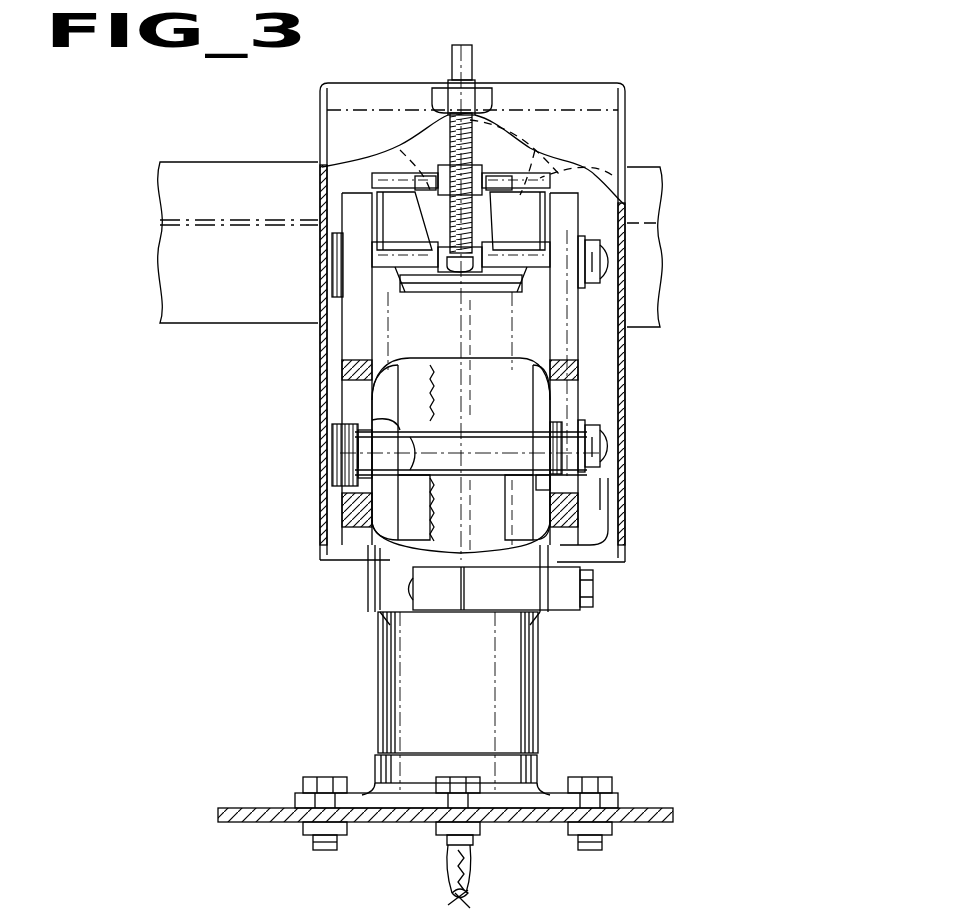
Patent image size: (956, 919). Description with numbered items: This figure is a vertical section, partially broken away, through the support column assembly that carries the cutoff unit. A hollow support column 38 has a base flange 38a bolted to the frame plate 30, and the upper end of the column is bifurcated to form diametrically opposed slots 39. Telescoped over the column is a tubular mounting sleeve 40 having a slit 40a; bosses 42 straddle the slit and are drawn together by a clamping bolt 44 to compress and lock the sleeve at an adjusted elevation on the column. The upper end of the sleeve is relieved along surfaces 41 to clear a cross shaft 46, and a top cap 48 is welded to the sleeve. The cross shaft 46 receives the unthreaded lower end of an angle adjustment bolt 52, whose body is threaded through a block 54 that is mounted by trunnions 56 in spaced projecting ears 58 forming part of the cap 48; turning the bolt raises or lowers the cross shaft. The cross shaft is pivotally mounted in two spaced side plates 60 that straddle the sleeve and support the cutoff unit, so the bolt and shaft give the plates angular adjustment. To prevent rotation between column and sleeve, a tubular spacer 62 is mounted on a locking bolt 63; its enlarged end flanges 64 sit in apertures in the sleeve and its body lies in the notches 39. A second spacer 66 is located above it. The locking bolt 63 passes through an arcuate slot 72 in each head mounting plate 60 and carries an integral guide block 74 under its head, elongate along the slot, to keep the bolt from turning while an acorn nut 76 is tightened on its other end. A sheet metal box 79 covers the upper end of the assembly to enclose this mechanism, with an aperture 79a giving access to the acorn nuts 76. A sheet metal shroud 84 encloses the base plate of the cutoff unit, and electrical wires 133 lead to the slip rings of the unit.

The sheet metal box 79 is at (628, 97).
The sheet metal shroud 84 is at (162, 192).
The angle adjustment bolt 52 is at (440, 132).
The block 54 is at (447, 168).
The trunnions 56 is at (372, 180).
The projecting ears 58 is at (405, 170).
The top cap 48 is at (557, 157).
The cross shaft 46 is at (497, 247).
The relieved surfaces 41 is at (397, 292).
The second spacer 66 is at (460, 285).
The side plates 60 is at (343, 305).
The acorn nut 76 is at (610, 260).
The arcuate slot 72 is at (342, 397).
The end flanges 64 is at (372, 420).
The guide block 74 is at (350, 440).
The locking bolt 63 is at (340, 457).
The tubular spacer 62 is at (480, 430).
The slots 39 is at (527, 513).
The aperture 79a is at (602, 495).
The tubular mounting sleeve 40 is at (370, 590).
The slit 40a is at (462, 562).
The clamping bolt 44 is at (594, 583).
The bosses 42 is at (440, 603).
The hollow support column 38 is at (540, 672).
The base flange 38a is at (293, 796).
The frame plate 30 is at (218, 810).
The electrical wires 133 is at (468, 900).